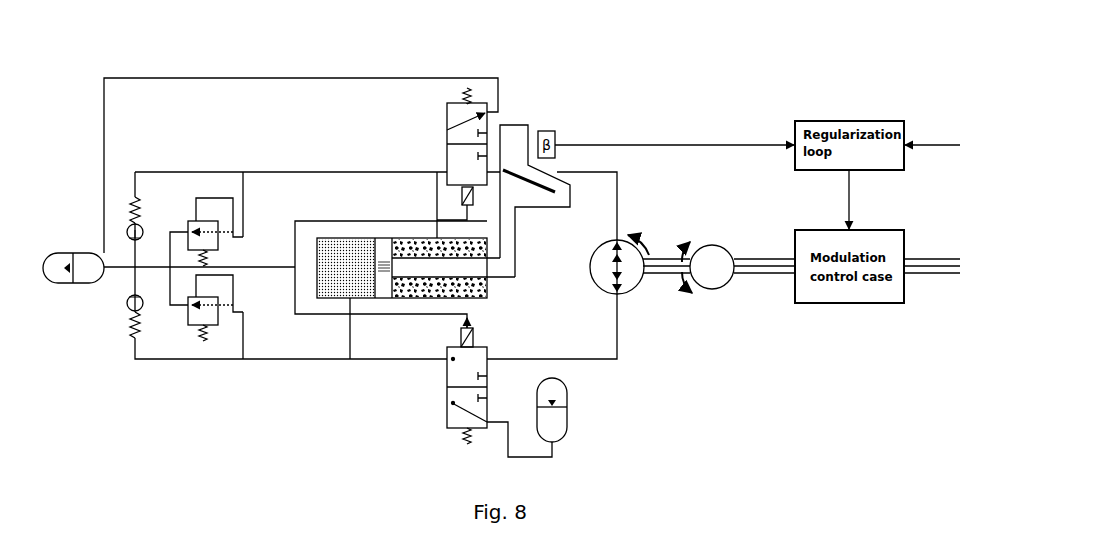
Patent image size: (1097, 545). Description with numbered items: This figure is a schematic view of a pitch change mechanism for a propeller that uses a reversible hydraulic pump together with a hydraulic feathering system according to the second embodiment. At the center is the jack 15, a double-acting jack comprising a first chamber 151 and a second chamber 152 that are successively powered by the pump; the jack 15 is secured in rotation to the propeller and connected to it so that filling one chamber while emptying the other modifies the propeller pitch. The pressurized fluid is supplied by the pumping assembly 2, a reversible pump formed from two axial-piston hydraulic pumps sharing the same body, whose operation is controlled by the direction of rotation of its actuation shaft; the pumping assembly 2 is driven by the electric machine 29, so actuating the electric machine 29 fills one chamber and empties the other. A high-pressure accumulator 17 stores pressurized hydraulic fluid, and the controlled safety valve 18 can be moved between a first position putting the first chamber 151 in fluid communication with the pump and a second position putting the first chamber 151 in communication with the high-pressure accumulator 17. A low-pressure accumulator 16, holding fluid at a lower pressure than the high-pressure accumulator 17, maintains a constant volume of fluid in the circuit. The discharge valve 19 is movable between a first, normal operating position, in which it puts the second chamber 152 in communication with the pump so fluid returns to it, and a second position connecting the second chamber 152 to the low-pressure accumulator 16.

The pumping assembly 2 is at (642, 292).
The jack 15 is at (382, 214).
The low-pressure accumulator 16 is at (85, 286).
The high-pressure accumulator 17 is at (573, 400).
The controlled safety valve 18 is at (446, 387).
The discharge valve 19 is at (446, 130).
The electric machine 29 is at (732, 292).
The first chamber 151 is at (328, 236).
The second chamber 152 is at (405, 236).